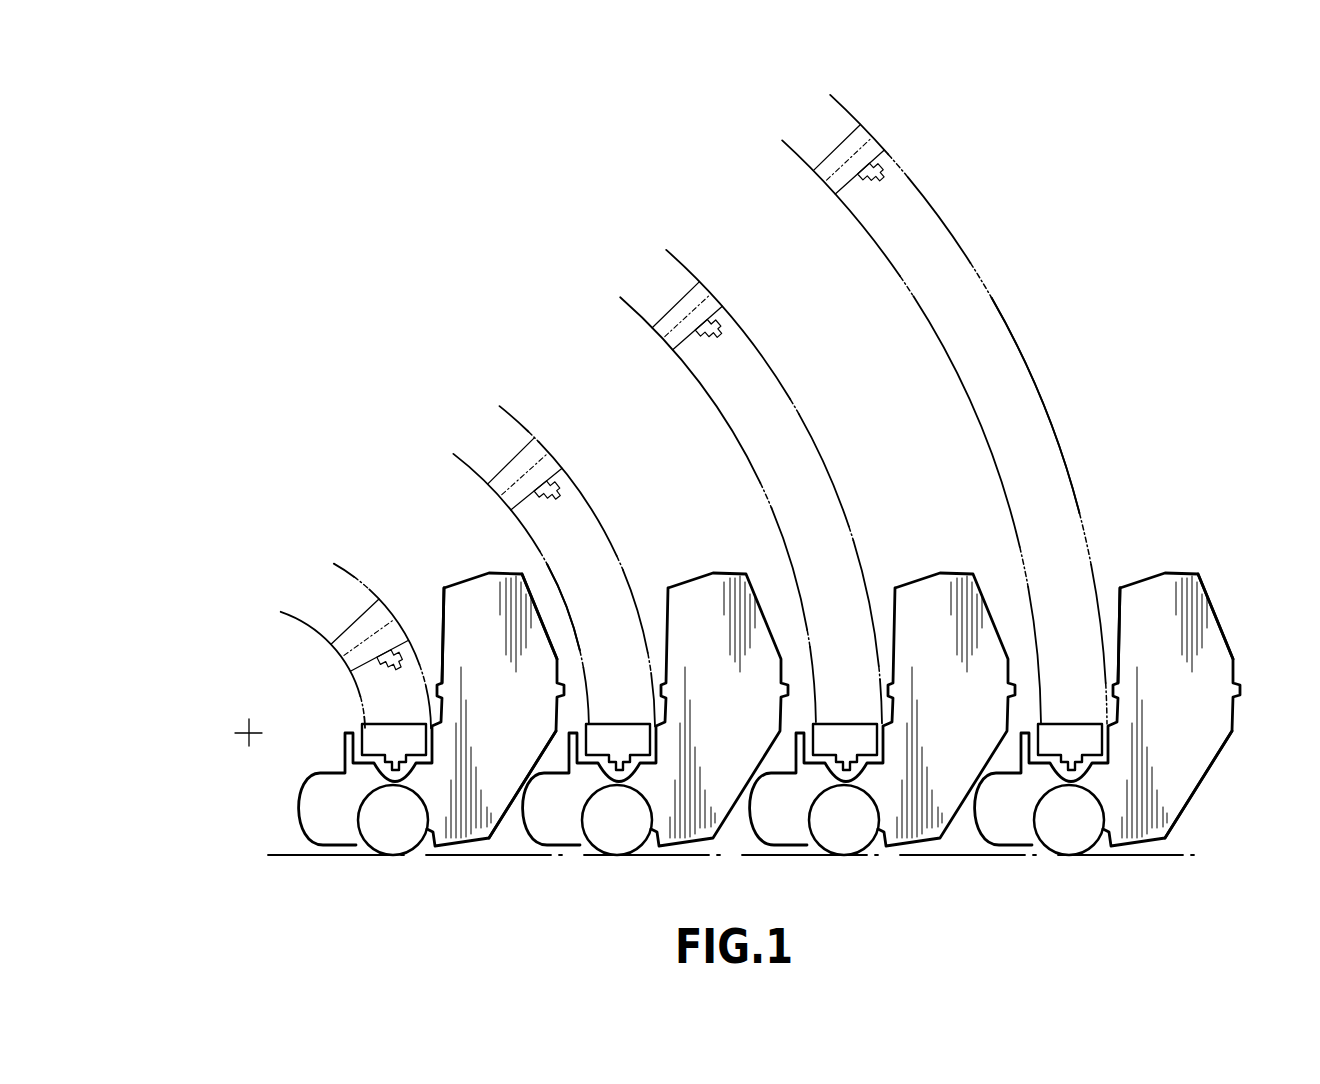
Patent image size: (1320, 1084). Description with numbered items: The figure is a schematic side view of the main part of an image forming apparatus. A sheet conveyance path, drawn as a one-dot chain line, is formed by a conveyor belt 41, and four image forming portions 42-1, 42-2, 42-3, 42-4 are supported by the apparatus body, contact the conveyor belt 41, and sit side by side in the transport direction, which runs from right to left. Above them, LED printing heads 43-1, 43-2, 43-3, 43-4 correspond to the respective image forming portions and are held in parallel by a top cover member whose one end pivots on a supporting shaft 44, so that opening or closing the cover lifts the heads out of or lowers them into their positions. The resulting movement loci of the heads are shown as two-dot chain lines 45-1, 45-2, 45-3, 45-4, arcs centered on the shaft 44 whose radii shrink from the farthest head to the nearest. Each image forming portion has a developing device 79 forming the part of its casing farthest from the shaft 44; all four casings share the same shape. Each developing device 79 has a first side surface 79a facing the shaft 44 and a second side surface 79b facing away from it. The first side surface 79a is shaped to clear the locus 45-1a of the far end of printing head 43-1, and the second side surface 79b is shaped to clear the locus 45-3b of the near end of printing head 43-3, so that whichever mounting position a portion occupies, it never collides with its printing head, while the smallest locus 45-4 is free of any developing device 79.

The conveyor belt 41 is at (1167, 857).
The image forming portion 42-1 is at (1190, 566).
The image forming portion 42-2 is at (955, 567).
The image forming portion 42-3 is at (725, 570).
The image forming portion 42-4 is at (463, 578).
The printing head 43-1 is at (1062, 730).
The printing head 43-2 is at (842, 730).
The printing head 43-3 is at (620, 735).
The printing head 43-4 is at (390, 727).
The supporting shaft 44 is at (246, 755).
The movement locus 45-1 is at (932, 330).
The movement locus 45-1a is at (1010, 327).
The movement locus 45-2 is at (728, 417).
The movement locus 45-3 is at (597, 503).
The movement locus 45-3b is at (574, 613).
The movement locus 45-4 is at (300, 630).
The developing device 79 is at (508, 822).
The first side surface 79a is at (440, 617).
The second side surface 79b is at (537, 600).